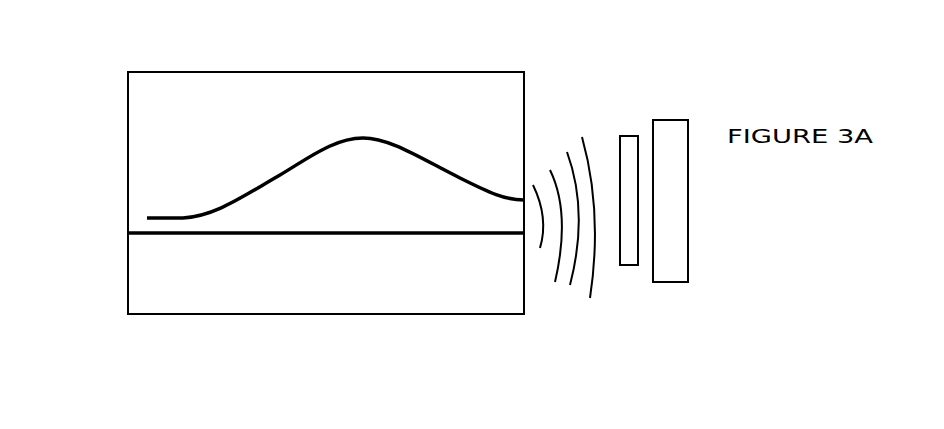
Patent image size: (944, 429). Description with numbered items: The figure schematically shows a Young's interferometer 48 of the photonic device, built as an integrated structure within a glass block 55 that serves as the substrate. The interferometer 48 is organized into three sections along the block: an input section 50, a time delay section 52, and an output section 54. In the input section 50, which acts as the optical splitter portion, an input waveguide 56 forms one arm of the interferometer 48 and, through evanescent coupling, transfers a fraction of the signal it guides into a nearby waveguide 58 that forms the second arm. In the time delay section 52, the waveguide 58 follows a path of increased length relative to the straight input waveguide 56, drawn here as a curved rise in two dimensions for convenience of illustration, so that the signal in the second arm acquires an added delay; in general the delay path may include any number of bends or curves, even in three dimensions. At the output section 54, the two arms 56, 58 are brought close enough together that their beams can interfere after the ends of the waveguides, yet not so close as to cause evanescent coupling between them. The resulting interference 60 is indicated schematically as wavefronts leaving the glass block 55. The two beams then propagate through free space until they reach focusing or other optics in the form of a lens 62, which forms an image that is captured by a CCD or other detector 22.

The detector 22 is at (672, 283).
The interferometer 48 is at (295, 285).
The input section 50 is at (161, 251).
The time delay section 52 is at (360, 134).
The output section 54 is at (497, 177).
The glass block 55 is at (214, 75).
The input waveguide 56 is at (145, 231).
The waveguide 58 is at (168, 213).
The interference 60 is at (562, 287).
The lens 62 is at (627, 135).